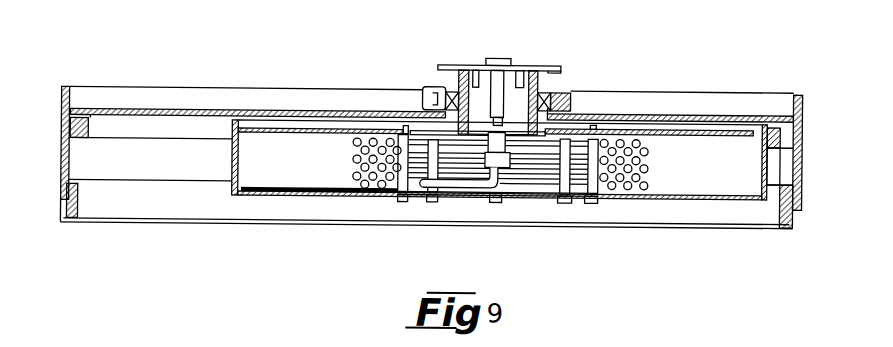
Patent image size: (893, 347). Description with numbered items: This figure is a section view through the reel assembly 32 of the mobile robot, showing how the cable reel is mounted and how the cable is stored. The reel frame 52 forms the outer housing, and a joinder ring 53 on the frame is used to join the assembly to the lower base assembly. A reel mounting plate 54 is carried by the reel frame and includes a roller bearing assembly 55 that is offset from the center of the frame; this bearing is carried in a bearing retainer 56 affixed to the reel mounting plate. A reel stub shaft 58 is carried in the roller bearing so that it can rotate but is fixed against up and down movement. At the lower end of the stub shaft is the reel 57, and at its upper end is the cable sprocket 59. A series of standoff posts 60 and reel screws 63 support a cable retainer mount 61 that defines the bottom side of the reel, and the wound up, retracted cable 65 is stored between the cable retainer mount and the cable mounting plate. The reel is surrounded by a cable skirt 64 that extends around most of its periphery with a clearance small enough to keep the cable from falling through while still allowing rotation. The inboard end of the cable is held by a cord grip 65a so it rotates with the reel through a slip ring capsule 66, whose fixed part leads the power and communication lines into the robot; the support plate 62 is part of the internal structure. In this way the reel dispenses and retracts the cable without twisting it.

The cartridge assembly 32 is at (803, 146).
The reel frame 52 is at (802, 168).
The joinder ring 53 is at (792, 216).
The reel mounting plate 54 is at (753, 114).
The roller bearing assembly 55 is at (548, 91).
The bearing retainer 56 is at (582, 93).
The reel 57 is at (708, 173).
The reel stub shaft 58 is at (456, 76).
The cable sprocket 59 is at (442, 65).
The standoff posts 60 is at (257, 137).
The cable retainer mount 61 is at (276, 191).
The support plate 62 is at (404, 181).
The reel screws 63 is at (431, 203).
The cable skirt 64 is at (232, 155).
The cable 65 is at (353, 156).
The cord grip 65a is at (503, 160).
The slip ring capsule 66 is at (508, 58).